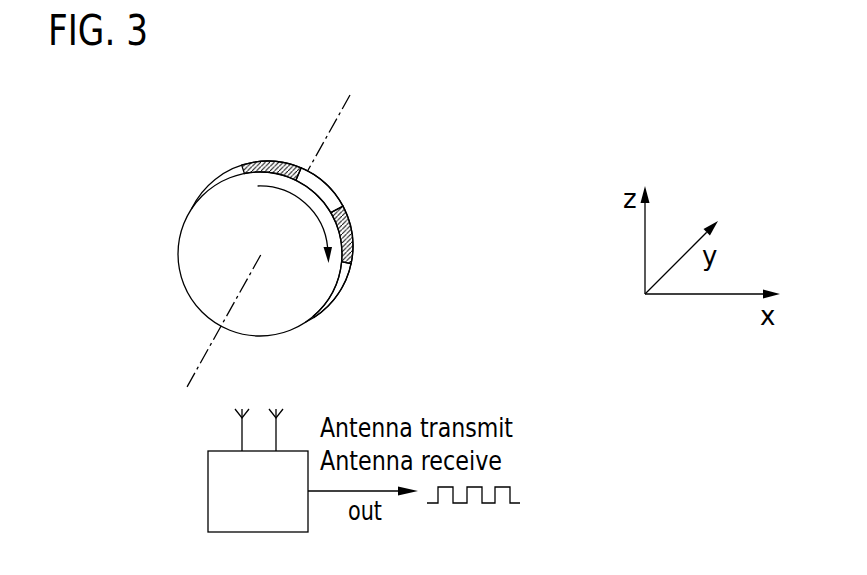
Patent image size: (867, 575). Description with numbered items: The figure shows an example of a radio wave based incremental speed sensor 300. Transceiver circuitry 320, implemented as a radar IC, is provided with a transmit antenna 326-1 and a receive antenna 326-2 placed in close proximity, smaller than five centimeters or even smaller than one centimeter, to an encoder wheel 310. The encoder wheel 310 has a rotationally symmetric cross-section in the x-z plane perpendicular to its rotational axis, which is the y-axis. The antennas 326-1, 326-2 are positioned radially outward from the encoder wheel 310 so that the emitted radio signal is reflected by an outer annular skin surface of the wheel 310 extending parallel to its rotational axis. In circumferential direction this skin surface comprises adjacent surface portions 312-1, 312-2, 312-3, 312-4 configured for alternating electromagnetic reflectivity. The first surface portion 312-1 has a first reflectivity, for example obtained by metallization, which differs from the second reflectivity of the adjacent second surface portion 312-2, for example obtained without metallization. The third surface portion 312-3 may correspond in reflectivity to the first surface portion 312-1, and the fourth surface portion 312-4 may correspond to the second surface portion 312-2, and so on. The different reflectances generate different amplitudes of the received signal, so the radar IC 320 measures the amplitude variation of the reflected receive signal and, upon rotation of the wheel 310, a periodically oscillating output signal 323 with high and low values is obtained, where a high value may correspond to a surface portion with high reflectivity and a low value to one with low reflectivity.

The radar system 300 is at (511, 152).
The encoder wheel 310 is at (156, 257).
The first surface portion 312-1 is at (258, 166).
The second surface portion 312-2 is at (323, 190).
The third surface portion 312-3 is at (352, 227).
The fourth surface portion 312-4 is at (350, 271).
The transceiver circuitry 320 is at (208, 501).
The output signal 323 is at (545, 494).
The transmit antenna 326-1 is at (275, 433).
The receive antenna 326-2 is at (242, 431).